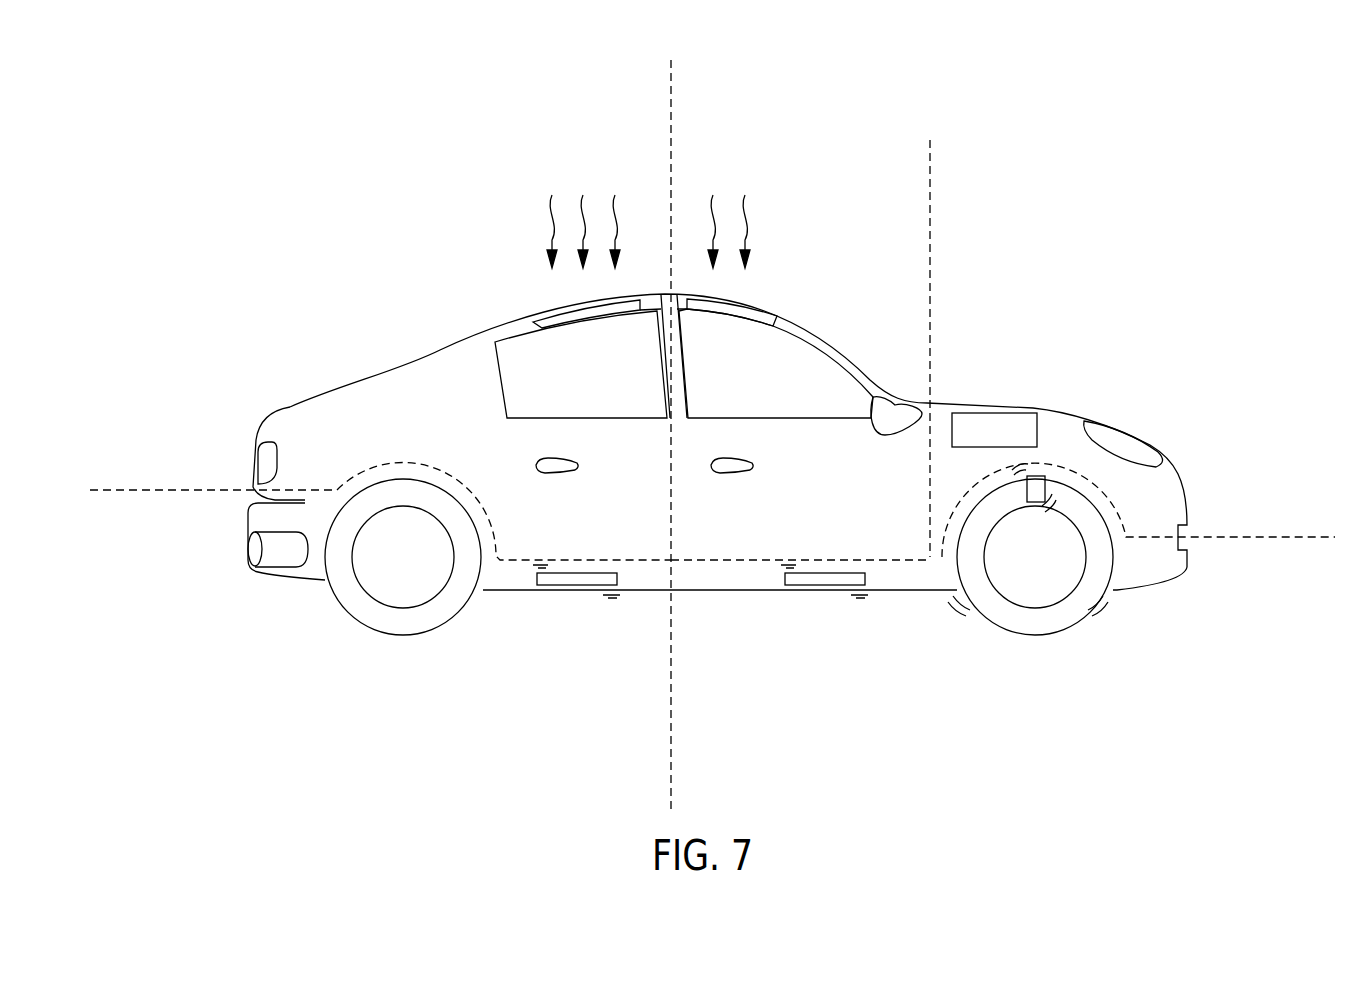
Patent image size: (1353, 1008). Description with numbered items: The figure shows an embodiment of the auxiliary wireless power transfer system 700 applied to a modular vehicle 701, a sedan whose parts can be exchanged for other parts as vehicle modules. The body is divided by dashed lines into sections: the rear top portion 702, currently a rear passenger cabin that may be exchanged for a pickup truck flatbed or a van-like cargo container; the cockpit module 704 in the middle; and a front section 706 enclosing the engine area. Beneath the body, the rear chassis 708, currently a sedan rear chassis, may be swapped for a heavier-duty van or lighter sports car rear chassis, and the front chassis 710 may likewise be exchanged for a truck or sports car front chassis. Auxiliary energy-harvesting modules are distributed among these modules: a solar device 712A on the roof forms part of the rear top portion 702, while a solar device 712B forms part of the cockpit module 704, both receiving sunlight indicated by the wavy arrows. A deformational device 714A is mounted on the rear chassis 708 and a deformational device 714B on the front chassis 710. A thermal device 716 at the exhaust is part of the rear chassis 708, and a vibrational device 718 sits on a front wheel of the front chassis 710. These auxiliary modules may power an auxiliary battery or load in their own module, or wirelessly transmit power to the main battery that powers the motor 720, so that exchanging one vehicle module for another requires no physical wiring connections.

The auxiliary wireless power transfer system 700 is at (196, 117).
The vehicle 701 is at (422, 367).
The rear top portion 702 is at (374, 202).
The cockpit module 704 is at (801, 152).
The front section 706 is at (1041, 300).
The rear chassis 708 is at (466, 708).
The front chassis 710 is at (866, 732).
The solar device 712A is at (562, 307).
The solar device 712B is at (758, 307).
The deformational device 714A is at (570, 587).
The deformational device 714B is at (828, 587).
The thermal device 716 is at (278, 558).
The vibrational device 718 is at (1036, 476).
The motor 720 is at (1005, 412).